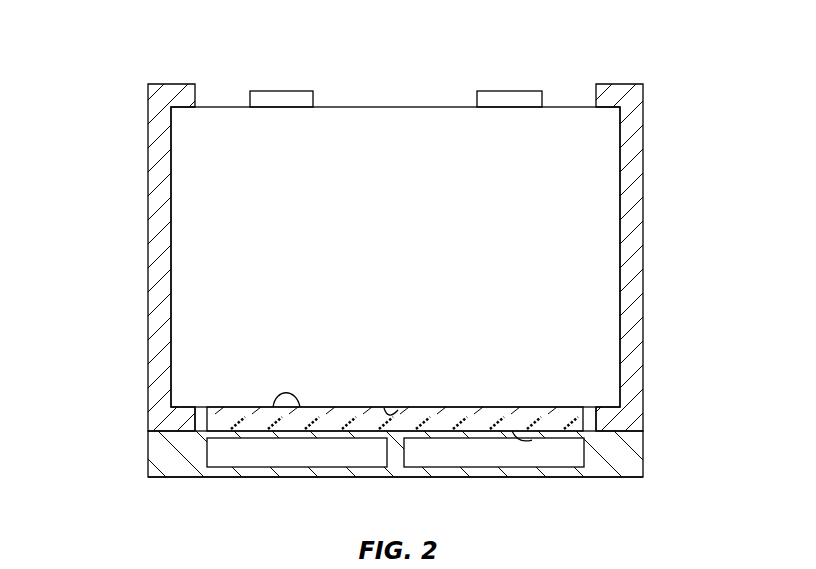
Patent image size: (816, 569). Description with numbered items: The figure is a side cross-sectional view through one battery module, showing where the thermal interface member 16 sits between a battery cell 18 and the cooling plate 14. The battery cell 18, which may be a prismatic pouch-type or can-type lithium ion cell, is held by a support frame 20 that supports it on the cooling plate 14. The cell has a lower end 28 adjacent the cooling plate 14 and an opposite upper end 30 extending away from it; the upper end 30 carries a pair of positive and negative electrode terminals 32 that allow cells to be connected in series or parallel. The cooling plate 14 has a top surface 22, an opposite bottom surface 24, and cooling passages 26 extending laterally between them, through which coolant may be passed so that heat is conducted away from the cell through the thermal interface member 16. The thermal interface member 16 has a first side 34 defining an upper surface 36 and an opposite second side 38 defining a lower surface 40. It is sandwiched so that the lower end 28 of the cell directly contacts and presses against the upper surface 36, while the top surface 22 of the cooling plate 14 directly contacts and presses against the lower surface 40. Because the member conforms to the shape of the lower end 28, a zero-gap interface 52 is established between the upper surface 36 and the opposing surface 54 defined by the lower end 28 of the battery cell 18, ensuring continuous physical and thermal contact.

The cooling plate 14 is at (148, 458).
The thermal interface member 16 is at (193, 431).
The battery cell 18 is at (380, 107).
The support frame 20 is at (148, 228).
The top surface 22 is at (167, 426).
The bottom surface 24 is at (172, 478).
The cooling passage 26 is at (587, 458).
The lower end 28 is at (612, 423).
The upper end 30 is at (566, 98).
The electrode terminal 32 is at (278, 90).
The first side 34 is at (327, 398).
The upper surface 36 is at (299, 414).
The second side 38 is at (428, 442).
The lower surface 40 is at (512, 431).
The zero-gap interface 52 is at (197, 409).
The opposing surface 54 is at (384, 408).